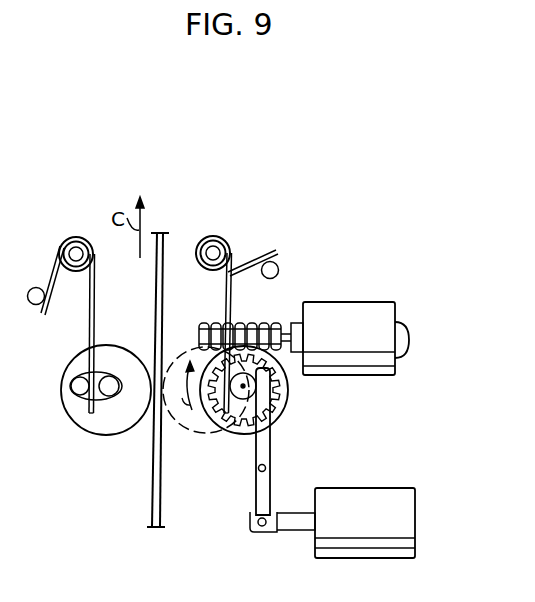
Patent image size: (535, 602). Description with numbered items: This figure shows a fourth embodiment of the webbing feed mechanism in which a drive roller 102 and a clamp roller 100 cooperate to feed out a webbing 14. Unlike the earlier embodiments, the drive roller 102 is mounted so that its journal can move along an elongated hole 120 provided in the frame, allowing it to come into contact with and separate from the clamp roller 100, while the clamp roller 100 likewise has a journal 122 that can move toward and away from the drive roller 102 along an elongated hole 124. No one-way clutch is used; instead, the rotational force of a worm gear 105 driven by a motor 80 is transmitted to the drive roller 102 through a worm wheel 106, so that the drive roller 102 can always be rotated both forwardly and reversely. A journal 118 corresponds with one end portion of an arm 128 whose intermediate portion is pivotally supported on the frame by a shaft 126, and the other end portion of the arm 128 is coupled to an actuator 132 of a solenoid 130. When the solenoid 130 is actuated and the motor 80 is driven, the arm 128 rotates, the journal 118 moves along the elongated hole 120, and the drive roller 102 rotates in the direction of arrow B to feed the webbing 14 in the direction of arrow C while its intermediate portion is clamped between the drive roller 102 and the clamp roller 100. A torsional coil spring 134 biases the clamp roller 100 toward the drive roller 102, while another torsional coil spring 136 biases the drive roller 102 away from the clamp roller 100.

The webbing 14 is at (156, 300).
The motor 80 is at (351, 313).
The clamp roller 100 is at (100, 433).
The drive roller 102 is at (186, 432).
The worm gear 105 is at (258, 325).
The worm wheel 106 is at (290, 392).
The journal 118 is at (240, 395).
The elongated hole 120 is at (222, 398).
The journal 122 is at (110, 394).
The elongated hole 124 is at (78, 396).
The shaft 126 is at (266, 472).
The arm 128 is at (270, 447).
The solenoid 130 is at (400, 505).
The actuator 132 is at (290, 524).
The torsional coil spring 134 is at (95, 321).
The torsional coil spring 136 is at (250, 259).